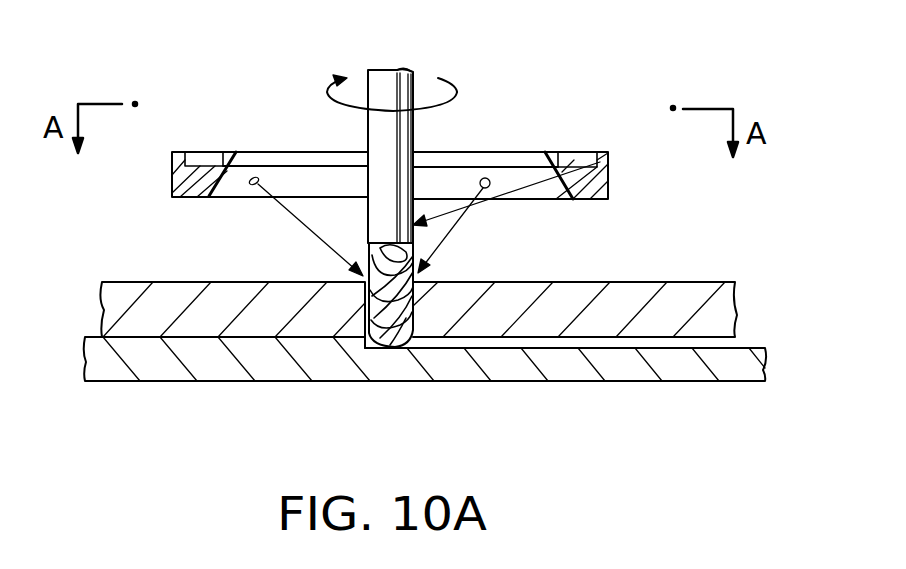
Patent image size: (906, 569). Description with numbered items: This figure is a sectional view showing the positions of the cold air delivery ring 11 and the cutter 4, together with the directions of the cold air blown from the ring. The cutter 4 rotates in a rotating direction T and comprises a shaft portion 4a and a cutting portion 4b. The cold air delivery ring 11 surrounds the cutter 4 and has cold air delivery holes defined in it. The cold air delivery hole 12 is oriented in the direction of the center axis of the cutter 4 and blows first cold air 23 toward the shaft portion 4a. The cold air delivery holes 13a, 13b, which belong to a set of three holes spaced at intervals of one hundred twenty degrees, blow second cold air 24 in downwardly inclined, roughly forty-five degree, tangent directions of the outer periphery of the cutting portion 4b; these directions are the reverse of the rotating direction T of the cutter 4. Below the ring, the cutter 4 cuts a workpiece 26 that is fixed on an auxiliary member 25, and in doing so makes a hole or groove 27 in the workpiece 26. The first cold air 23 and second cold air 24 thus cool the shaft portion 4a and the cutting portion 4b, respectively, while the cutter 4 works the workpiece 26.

The cutter 4 is at (382, 77).
The shaft portion 4a is at (378, 138).
The cutting portion 4b is at (400, 350).
The cold air delivery ring 11 is at (608, 181).
The cold air delivery hole 12 is at (553, 184).
The cold air delivery hole 13a is at (488, 178).
The cold air delivery hole 13b is at (257, 177).
The first cold air 23 is at (478, 203).
The second cold air 24 is at (322, 239).
The auxiliary member 25 is at (123, 369).
The workpiece 26 is at (132, 293).
The hole or groove 27 is at (645, 297).
The rotating direction T is at (460, 98).